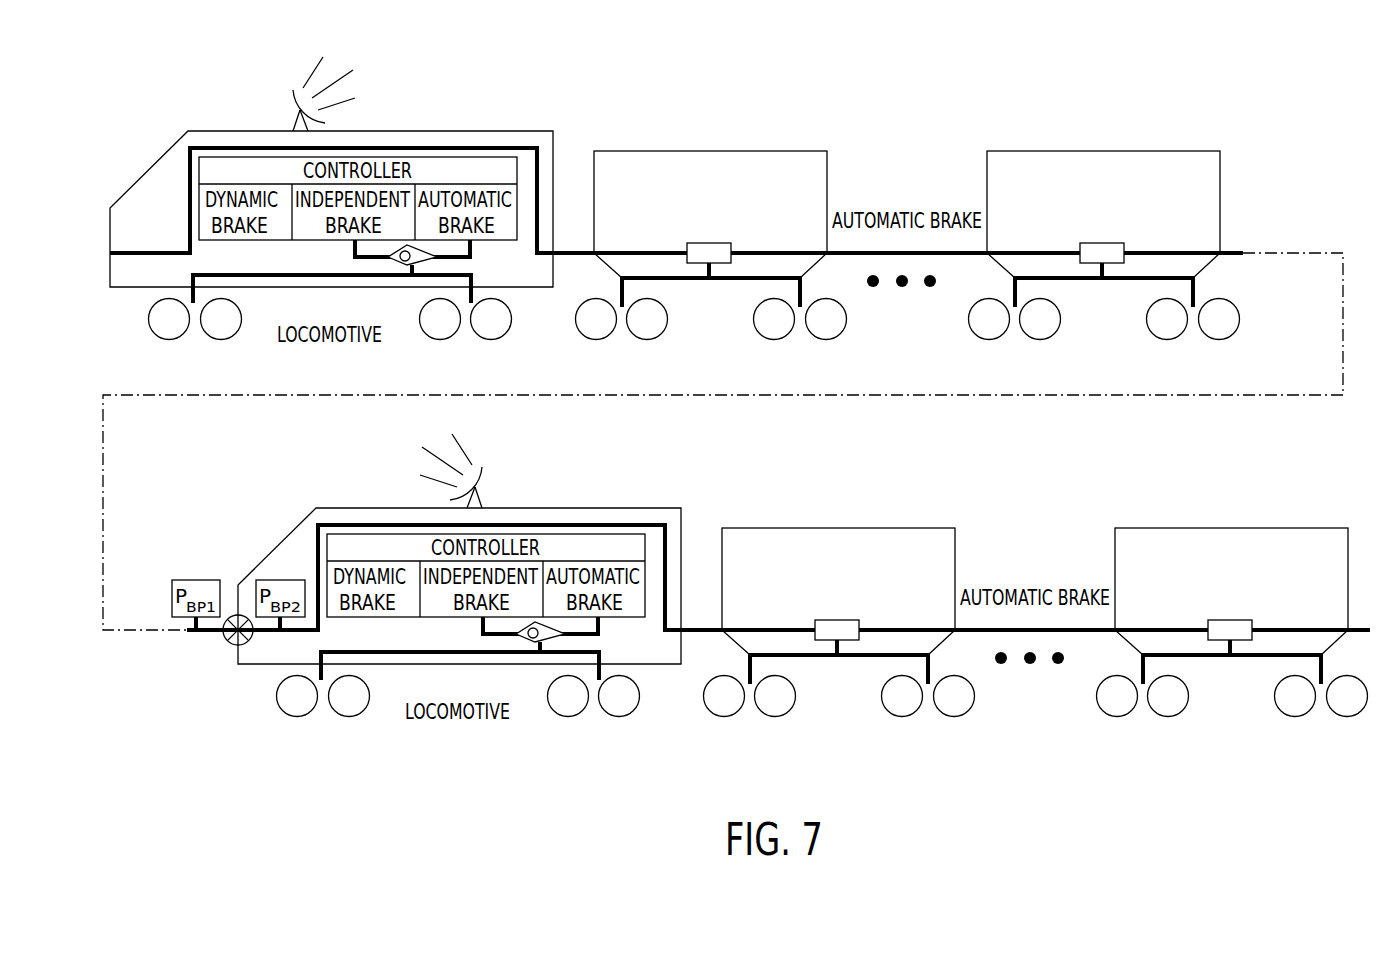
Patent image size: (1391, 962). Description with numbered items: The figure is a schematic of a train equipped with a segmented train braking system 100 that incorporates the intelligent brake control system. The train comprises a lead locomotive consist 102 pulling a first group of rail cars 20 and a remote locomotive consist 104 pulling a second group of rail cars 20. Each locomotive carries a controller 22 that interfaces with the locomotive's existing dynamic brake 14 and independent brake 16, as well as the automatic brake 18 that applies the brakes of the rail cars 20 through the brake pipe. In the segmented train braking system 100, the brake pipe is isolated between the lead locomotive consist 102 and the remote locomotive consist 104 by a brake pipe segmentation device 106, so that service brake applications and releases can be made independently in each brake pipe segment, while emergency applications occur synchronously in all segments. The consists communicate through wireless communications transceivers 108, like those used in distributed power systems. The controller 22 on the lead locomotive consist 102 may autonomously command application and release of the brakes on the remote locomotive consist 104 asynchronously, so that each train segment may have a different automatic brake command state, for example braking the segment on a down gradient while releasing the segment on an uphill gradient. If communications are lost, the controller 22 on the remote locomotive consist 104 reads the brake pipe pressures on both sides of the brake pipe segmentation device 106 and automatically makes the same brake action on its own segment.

The segmented train braking system 100 is at (1215, 108).
The lead locomotive consist 102 is at (145, 176).
The remote locomotive consist 104 is at (277, 548).
The brake pipe segmentation device 106 is at (232, 656).
The wireless communications transceiver 108 is at (298, 125).
The controller 22 is at (450, 163).
The dynamic brake 14 is at (282, 233).
The independent brake 16 is at (307, 233).
The automatic brake 18 is at (503, 233).
The rail car 20 is at (712, 151).